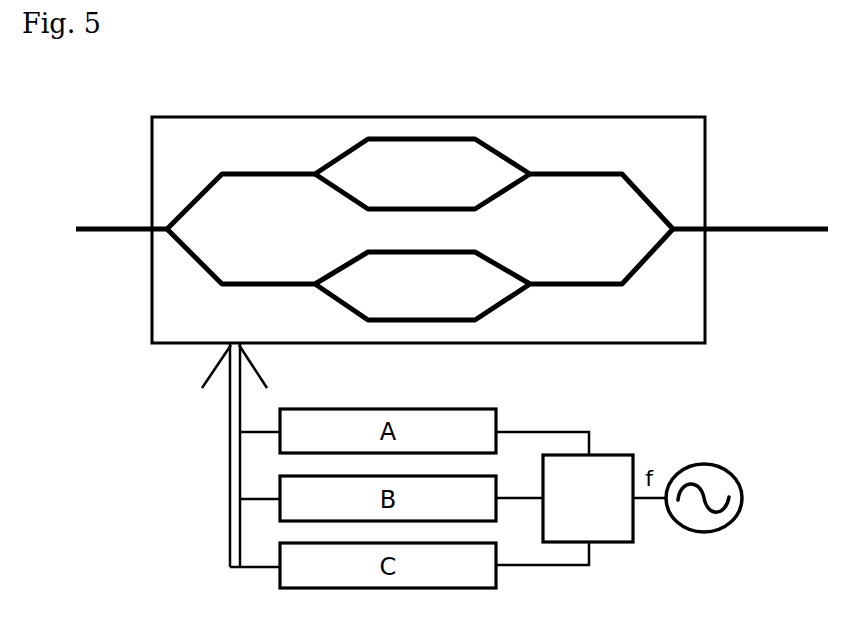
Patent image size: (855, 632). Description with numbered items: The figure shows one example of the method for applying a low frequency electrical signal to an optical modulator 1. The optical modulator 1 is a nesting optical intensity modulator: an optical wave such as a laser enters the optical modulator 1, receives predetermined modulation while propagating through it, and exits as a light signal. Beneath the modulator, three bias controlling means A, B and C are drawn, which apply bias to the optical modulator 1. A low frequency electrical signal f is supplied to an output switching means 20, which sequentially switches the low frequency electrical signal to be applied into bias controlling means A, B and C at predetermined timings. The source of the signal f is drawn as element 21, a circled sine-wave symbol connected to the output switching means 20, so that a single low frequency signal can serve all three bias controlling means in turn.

The optical modulator 1 is at (588, 141).
The output switching means 20 is at (588, 498).
The oscillator 21 is at (720, 487).